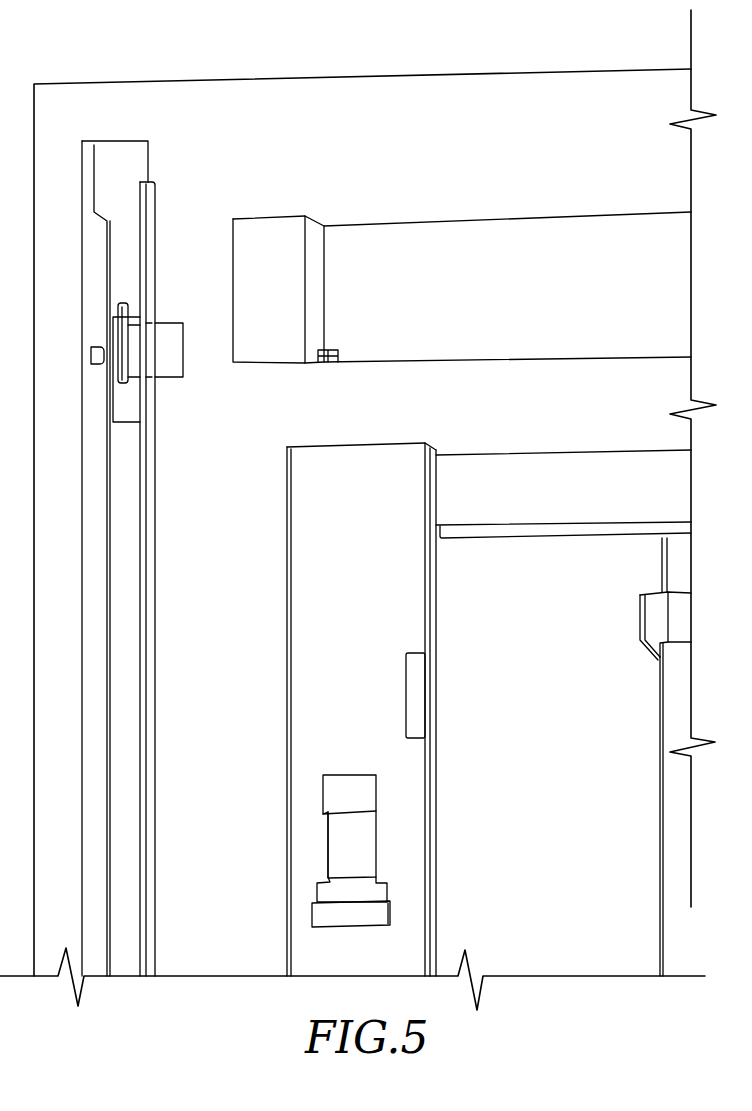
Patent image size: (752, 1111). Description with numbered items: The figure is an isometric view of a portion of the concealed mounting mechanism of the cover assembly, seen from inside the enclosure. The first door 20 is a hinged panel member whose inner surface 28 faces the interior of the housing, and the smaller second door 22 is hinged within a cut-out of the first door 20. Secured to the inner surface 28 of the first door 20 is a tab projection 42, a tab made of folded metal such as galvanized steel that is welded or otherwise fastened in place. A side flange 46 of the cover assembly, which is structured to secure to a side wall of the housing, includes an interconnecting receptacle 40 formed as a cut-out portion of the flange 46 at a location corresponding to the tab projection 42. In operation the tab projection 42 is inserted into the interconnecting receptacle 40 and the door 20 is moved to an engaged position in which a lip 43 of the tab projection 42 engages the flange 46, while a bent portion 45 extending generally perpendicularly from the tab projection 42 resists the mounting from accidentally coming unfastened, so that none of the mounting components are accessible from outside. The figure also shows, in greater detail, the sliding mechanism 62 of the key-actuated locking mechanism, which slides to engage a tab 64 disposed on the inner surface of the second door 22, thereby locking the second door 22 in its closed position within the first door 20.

The first door 20 is at (342, 77).
The second door 22 is at (670, 823).
The inner surface 28 is at (490, 380).
The interconnecting receptacle 40 is at (138, 405).
The tab projection 42 is at (137, 373).
The lip 43 is at (118, 318).
The bent portion 45 is at (130, 338).
The side flange 46 is at (90, 552).
The sliding mechanism 62 is at (363, 846).
The tab 64 is at (652, 613).